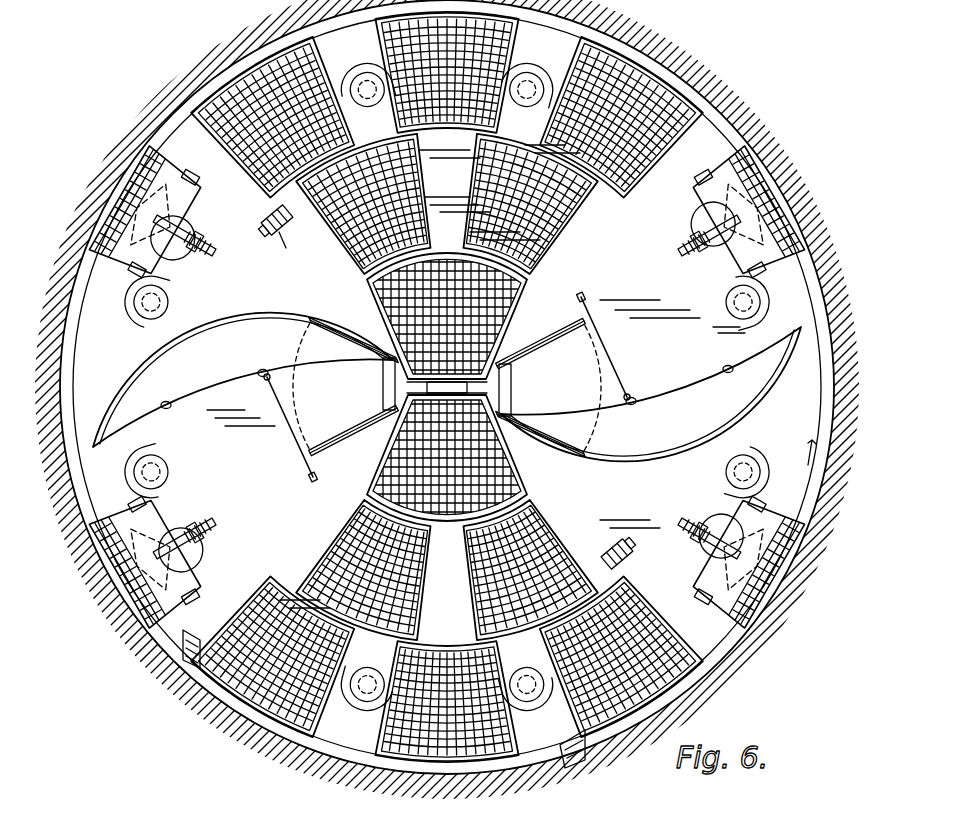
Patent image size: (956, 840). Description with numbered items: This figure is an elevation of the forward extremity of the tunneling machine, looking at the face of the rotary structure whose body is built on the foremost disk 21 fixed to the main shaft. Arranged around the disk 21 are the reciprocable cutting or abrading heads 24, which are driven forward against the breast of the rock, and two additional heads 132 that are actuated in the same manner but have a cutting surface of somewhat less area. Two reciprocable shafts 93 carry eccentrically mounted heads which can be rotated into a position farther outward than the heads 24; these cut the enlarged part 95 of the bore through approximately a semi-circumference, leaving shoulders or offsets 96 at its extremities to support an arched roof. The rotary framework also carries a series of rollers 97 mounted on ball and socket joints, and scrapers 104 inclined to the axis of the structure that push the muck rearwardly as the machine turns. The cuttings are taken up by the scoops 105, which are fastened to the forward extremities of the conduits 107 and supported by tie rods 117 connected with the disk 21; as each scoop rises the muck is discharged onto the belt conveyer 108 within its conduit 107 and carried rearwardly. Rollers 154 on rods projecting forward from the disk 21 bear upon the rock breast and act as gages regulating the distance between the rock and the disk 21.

The foremost disk 21 is at (556, 282).
The cutting or abrading heads 24 is at (382, 36).
The reciprocable shafts 93 is at (446, 386).
The enlarged part of the tunnel bore 95 is at (738, 124).
The shoulders or offsets 96 is at (447, 387).
The rollers 97 is at (360, 80).
The scrapers 104 is at (190, 668).
The scoops 105 is at (447, 387).
The conduits 107 is at (447, 386).
The belt conveyers 108 is at (447, 386).
The tie rods 117 is at (310, 476).
The additional heads 132 is at (446, 387).
The roller 154 is at (618, 530).